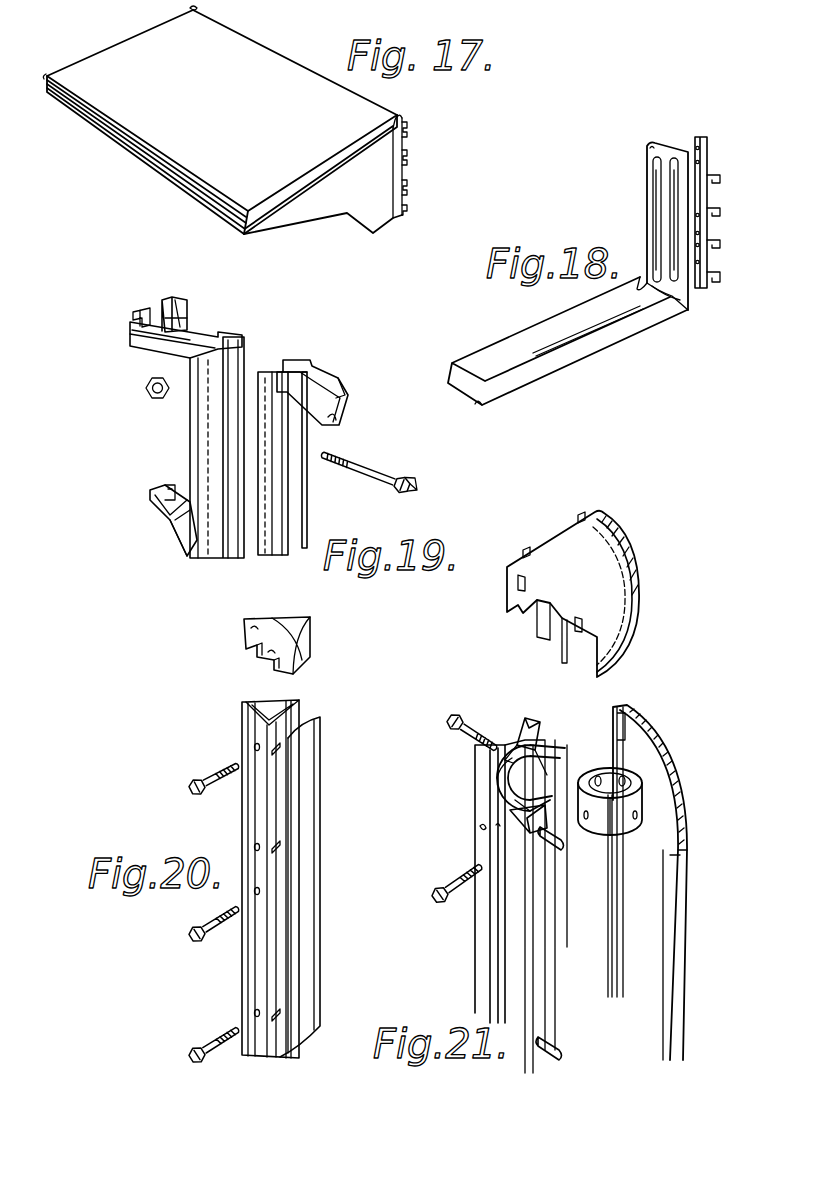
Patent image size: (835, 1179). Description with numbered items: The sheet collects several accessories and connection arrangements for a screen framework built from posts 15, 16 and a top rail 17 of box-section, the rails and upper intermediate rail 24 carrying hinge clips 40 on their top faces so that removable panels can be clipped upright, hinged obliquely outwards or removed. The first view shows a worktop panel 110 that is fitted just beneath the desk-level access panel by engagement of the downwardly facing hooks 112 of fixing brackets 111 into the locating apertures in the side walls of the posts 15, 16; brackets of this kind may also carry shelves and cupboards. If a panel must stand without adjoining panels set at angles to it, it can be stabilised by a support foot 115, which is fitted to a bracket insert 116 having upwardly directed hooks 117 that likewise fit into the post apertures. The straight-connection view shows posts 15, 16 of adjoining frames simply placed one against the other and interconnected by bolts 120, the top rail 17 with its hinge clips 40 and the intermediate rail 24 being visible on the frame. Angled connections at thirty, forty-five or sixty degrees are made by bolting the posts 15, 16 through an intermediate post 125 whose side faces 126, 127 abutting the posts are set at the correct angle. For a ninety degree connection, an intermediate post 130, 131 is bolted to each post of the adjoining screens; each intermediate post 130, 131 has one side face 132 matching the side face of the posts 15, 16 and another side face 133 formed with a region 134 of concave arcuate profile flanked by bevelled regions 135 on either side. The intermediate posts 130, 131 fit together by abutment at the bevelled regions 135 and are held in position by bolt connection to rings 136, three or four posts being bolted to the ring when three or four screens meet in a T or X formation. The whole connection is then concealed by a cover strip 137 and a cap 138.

In FIG. 17, the worktop panel 110 is at (222, 111).
In FIG. 17, the fixing bracket 111 is at (330, 197).
In FIG. 17, the downwardly facing hook 112 is at (403, 126).
In FIG. 18, the support foot 115 is at (603, 338).
In FIG. 18, the bracket insert 116 is at (690, 143).
In FIG. 18, the upwardly directed hook 117 is at (723, 146).
In FIG. 19, the post 15 is at (257, 378).
In FIG. 19, the post 16 is at (198, 437).
In FIG. 19, the top rail 17 is at (193, 338).
In FIG. 19, the hinge clip 40 is at (180, 305).
In FIG. 19, the upper intermediate rail 24 is at (172, 522).
In FIG. 19, the bolt 120 is at (370, 473).
In FIG. 20, the intermediate post 125 is at (242, 964).
In FIG. 20, the side face 126 is at (257, 719).
In FIG. 20, the side face 127 is at (272, 704).
In FIG. 21, the intermediate post 130 is at (478, 808).
In FIG. 21, the intermediate post 131 is at (500, 733).
In FIG. 21, the side face 132 is at (497, 950).
In FIG. 21, the side face 133 is at (558, 778).
In FIG. 21, the concave arcuate region 134 is at (547, 733).
In FIG. 21, the bevelled region 135 is at (497, 777).
In FIG. 21, the ring 136 is at (643, 802).
In FIG. 21, the cover strip 137 is at (660, 731).
In FIG. 21, the cap 138 is at (597, 578).